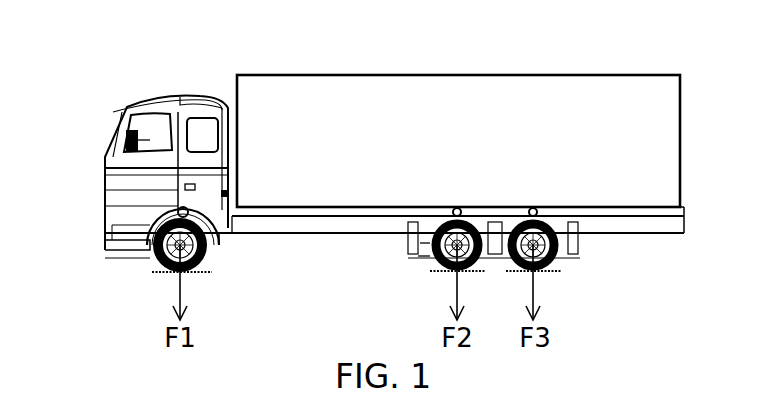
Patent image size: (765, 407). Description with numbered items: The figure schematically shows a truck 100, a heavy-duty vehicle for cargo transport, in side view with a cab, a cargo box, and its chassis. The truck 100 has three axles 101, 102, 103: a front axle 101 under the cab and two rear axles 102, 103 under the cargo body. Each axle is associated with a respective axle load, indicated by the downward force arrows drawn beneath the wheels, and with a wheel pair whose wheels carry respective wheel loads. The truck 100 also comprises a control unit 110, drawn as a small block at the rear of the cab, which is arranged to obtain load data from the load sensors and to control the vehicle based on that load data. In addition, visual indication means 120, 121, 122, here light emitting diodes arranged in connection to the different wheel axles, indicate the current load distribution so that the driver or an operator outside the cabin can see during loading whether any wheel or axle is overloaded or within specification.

The truck 100 is at (84, 45).
The axle 101 is at (183, 245).
The axle 102 is at (457, 245).
The axle 103 is at (533, 245).
The control unit 110 is at (228, 190).
The visual indication means 120 is at (188, 212).
The visual indication means 121 is at (457, 208).
The visual indication means 122 is at (533, 208).